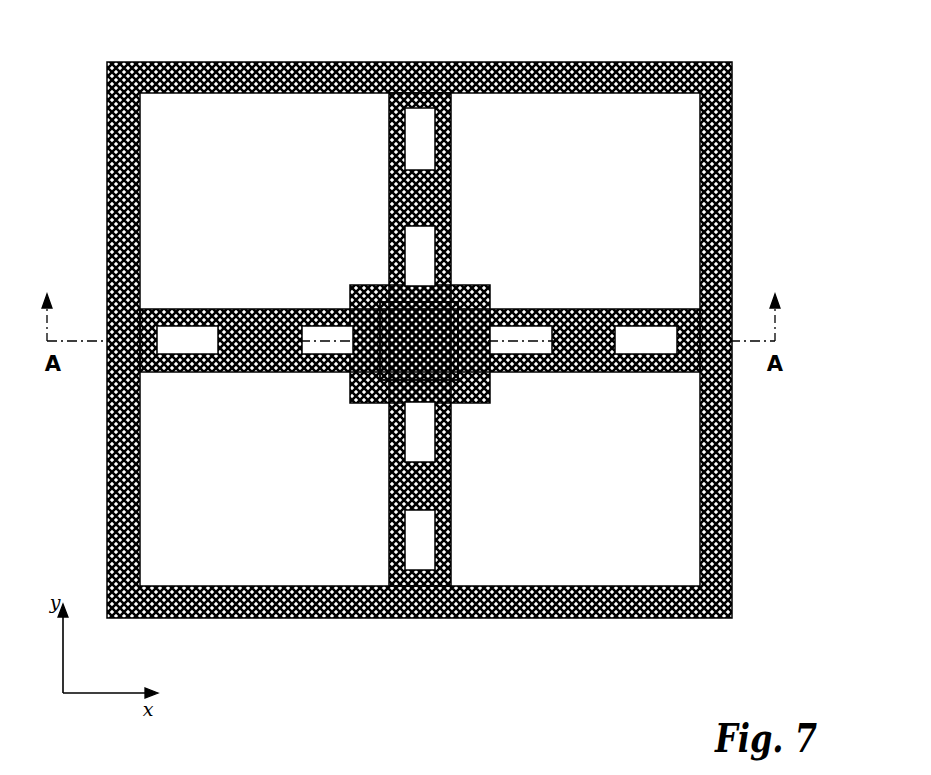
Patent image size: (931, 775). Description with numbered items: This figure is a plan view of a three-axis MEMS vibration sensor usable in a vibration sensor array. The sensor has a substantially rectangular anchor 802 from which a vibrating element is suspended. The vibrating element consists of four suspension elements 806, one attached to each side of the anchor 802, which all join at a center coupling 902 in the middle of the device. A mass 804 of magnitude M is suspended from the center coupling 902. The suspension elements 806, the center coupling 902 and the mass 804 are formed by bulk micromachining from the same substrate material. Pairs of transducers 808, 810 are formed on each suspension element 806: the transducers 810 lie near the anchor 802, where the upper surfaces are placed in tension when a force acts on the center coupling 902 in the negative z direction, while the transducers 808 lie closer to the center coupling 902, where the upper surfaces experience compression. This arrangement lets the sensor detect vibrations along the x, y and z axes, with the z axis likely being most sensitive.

The anchor 802 is at (317, 618).
The mass 804 is at (483, 285).
The suspension elements 806 is at (448, 107).
The transducers 808 is at (427, 344).
The transducers 810 is at (417, 339).
The center coupling 902 is at (437, 340).